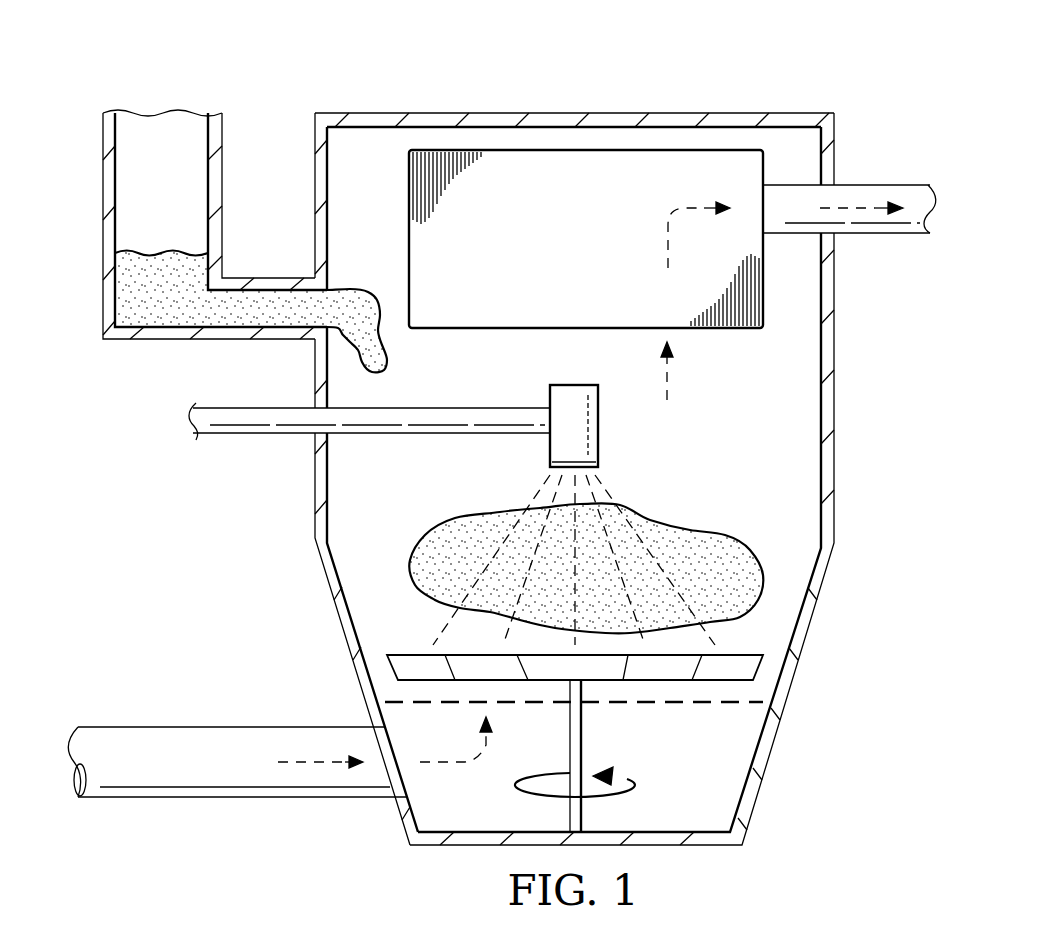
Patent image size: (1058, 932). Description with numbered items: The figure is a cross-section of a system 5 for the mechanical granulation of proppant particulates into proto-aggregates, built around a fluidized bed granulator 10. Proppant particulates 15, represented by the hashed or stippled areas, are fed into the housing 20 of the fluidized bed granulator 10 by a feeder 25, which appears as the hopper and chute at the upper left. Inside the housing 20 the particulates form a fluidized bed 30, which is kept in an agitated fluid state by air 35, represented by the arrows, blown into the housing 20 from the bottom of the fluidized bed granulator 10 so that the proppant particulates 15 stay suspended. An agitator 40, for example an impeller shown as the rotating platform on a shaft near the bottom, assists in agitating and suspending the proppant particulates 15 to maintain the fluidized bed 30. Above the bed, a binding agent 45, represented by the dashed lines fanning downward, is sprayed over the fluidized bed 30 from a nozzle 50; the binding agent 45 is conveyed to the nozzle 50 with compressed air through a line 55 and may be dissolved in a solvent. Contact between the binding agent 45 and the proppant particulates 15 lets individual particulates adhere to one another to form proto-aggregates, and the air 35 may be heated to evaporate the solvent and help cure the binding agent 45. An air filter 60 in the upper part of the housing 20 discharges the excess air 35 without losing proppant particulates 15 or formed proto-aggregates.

The system 5 is at (279, 78).
The fluidized bed granulator 10 is at (691, 112).
The proppant particulates 15 is at (177, 253).
The housing 20 is at (330, 467).
The feeder 25 is at (280, 283).
The fluidized bed 30 is at (681, 523).
The air 35 is at (853, 208).
The agitator 40 is at (765, 668).
The binding agent 45 is at (540, 492).
The nozzle 50 is at (550, 397).
The line 55 is at (255, 417).
The air filter 60 is at (570, 253).